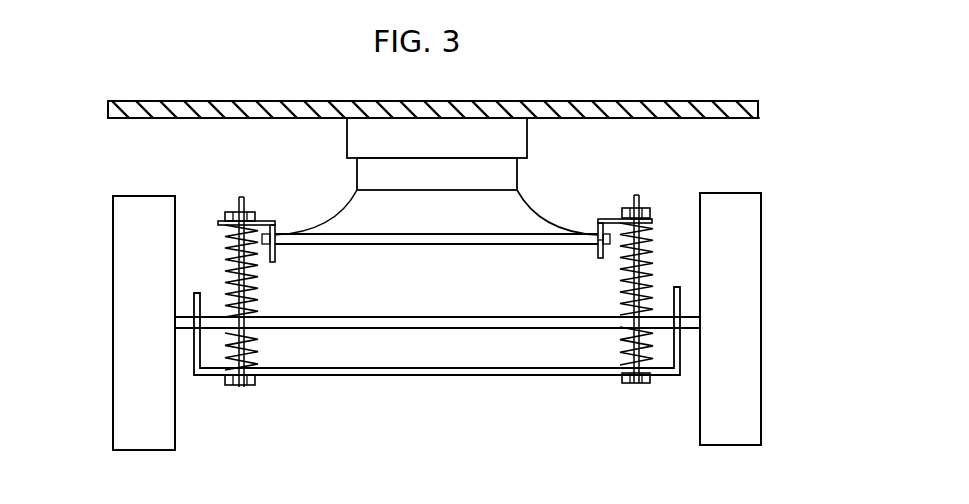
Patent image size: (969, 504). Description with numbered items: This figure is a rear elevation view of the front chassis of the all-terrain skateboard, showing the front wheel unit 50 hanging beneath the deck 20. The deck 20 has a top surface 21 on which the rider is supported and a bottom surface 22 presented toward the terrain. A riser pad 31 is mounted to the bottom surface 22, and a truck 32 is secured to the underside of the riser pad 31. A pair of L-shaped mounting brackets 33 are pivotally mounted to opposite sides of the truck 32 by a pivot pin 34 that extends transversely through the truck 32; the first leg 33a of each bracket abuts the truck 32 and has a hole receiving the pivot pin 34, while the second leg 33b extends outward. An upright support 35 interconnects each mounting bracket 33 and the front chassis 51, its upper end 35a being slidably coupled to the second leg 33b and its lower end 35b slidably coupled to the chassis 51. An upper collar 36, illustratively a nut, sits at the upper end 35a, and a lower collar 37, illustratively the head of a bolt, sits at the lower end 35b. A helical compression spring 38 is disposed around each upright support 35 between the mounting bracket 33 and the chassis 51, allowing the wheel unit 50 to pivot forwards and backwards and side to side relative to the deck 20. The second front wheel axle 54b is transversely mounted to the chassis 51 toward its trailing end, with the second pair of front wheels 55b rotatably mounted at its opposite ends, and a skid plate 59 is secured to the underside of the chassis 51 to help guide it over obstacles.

The deck 20 is at (495, 96).
The top surface 21 is at (655, 101).
The bottom surface 22 is at (683, 118).
The riser pad 31 is at (518, 137).
The truck 32 is at (505, 210).
The mounting bracket 33 is at (273, 220).
The first leg 33a is at (600, 256).
The second leg 33b is at (655, 219).
The pivot pin 34 is at (264, 258).
The upright support 35 is at (420, 255).
The upper end 35a is at (240, 197).
The lower end 35b is at (258, 368).
The upper collar 36 is at (228, 212).
The lower collar 37 is at (240, 386).
The helical compression spring 38 is at (652, 264).
The front wheel unit 50 is at (770, 305).
The front chassis 51 is at (555, 375).
The second front wheel axle 54b is at (456, 329).
The second pair of front wheels 55b is at (142, 395).
The skid plate 59 is at (357, 375).